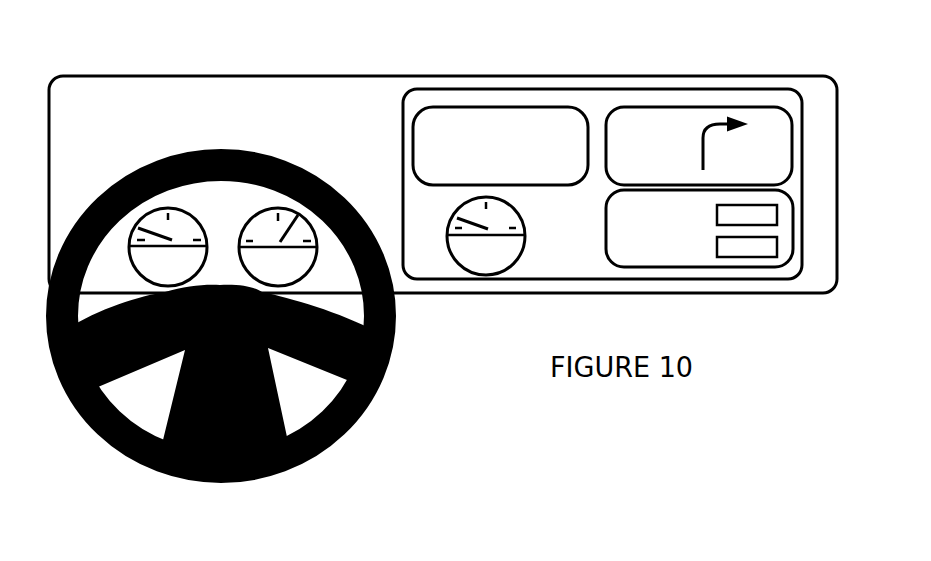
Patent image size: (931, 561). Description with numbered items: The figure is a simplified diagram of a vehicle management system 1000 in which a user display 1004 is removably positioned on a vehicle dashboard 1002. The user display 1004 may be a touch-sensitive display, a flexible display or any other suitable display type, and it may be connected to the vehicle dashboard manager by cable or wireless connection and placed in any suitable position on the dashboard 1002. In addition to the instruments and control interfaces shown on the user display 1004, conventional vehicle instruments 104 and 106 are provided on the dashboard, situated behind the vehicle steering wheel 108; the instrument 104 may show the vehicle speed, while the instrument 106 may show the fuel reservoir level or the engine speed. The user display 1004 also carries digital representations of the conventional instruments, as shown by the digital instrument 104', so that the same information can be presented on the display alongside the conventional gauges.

The vehicle management system 1000 is at (545, 47).
The vehicle dashboard 1002 is at (150, 77).
The user display 1004 is at (639, 88).
The vehicle instrument 104 is at (168, 237).
The vehicle instrument 106 is at (290, 209).
The digital instrument 104' is at (506, 236).
The vehicle steering wheel 108 is at (387, 373).